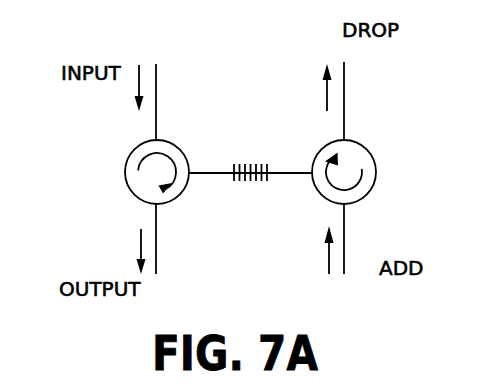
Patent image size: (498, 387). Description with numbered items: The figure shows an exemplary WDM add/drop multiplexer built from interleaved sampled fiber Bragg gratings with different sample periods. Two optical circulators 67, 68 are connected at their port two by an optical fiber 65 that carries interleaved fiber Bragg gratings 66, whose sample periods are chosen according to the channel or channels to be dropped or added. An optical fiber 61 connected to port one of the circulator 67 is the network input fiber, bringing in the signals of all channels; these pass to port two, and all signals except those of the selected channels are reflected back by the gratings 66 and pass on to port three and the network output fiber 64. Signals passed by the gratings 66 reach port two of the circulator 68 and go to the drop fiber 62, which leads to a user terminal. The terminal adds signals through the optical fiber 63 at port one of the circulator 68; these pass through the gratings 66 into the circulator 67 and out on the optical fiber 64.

The optical fiber 61 is at (157, 94).
The optical fiber 62 is at (345, 93).
The optical fiber 63 is at (345, 252).
The optical fiber 64 is at (157, 253).
The optical fiber 65 is at (221, 176).
The interleaved fiber Bragg gratings 66 is at (250, 168).
The optical circulator 67 is at (178, 149).
The optical circulator 68 is at (365, 149).